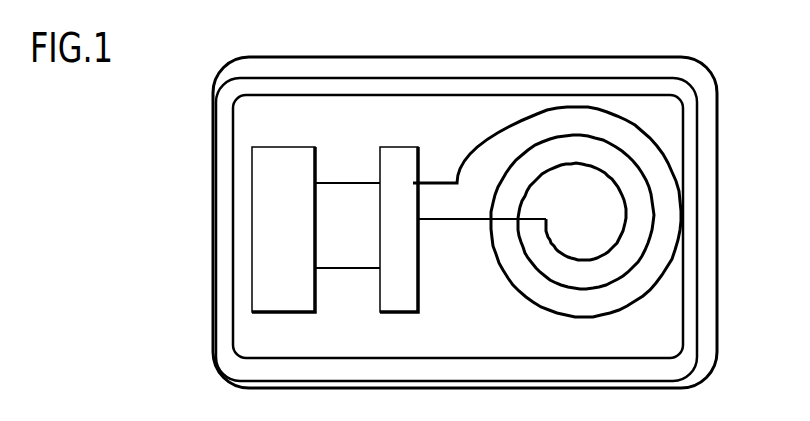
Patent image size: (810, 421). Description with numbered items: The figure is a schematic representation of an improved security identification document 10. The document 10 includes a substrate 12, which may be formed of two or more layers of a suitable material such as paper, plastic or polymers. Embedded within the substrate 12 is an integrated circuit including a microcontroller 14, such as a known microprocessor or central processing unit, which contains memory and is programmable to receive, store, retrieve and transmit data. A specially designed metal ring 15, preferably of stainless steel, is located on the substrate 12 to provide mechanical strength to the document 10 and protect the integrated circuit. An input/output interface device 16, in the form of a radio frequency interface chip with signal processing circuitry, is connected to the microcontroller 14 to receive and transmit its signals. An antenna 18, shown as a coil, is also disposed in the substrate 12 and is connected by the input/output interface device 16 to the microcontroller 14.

The security identification document 10 is at (187, 115).
The substrate 12 is at (697, 93).
The microcontroller 14 is at (282, 314).
The metal ring 15 is at (235, 137).
The input/output interface device 16 is at (400, 314).
The antenna 18 is at (592, 319).